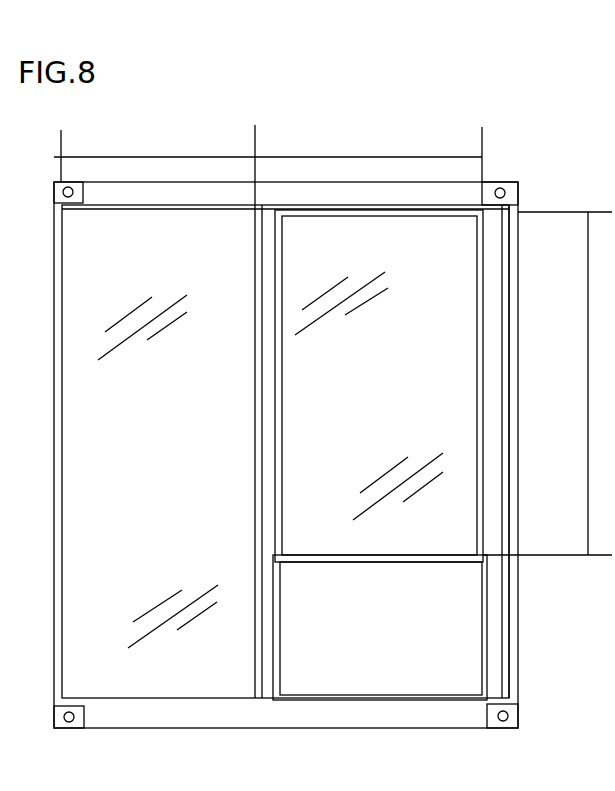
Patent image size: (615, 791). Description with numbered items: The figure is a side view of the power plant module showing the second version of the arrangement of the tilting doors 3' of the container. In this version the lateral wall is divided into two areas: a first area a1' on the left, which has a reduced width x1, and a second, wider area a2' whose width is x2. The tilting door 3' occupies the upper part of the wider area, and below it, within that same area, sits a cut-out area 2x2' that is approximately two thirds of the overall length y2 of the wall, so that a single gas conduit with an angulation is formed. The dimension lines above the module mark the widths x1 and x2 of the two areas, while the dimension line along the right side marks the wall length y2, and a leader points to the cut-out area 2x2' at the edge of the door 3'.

The first glass panel area a1' is at (180, 451).
The tilting door 3' is at (379, 386).
The lower panel area a2' is at (380, 627).
The frame member width 2x2' is at (530, 451).
The first panel width dimension x1 is at (154, 165).
The second panel width dimension x2 is at (368, 154).
The second panel height dimension y2 is at (547, 383).